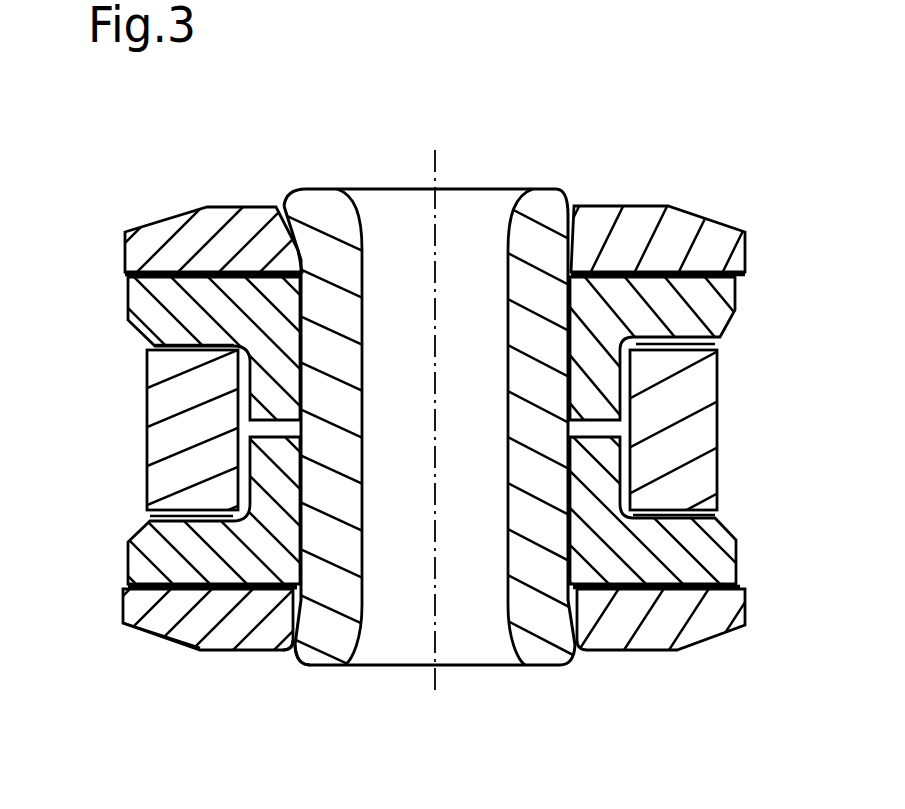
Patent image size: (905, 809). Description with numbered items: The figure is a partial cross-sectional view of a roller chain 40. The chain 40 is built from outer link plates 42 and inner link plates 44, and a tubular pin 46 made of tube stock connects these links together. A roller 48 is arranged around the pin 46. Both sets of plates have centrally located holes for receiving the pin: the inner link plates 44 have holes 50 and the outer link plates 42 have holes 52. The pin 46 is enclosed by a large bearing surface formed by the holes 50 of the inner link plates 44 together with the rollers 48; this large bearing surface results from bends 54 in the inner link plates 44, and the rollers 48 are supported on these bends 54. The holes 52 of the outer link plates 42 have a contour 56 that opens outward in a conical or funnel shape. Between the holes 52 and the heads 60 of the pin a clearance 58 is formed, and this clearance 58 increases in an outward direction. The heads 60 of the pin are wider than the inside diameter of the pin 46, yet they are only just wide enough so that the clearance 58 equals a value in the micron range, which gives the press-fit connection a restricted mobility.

The roller chain 40 is at (196, 153).
The outer link plates 42 is at (695, 237).
The inner link plates 44 is at (724, 303).
The tubular pin 46 is at (340, 548).
The roller 48 is at (190, 408).
The holes of the inner link plates 50 is at (157, 638).
The holes of the outer link plates 52 is at (293, 594).
The bends 54 is at (233, 344).
The contour 56 is at (290, 635).
The clearance 58 is at (285, 660).
The heads of the pin 60 is at (546, 206).